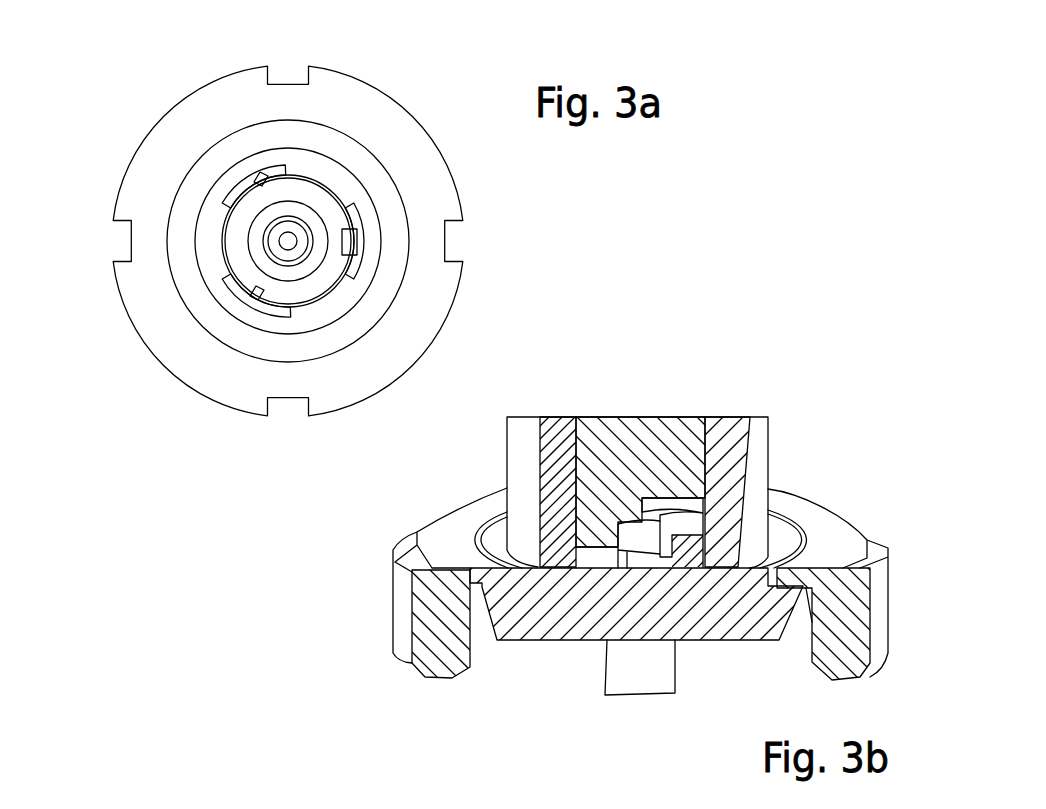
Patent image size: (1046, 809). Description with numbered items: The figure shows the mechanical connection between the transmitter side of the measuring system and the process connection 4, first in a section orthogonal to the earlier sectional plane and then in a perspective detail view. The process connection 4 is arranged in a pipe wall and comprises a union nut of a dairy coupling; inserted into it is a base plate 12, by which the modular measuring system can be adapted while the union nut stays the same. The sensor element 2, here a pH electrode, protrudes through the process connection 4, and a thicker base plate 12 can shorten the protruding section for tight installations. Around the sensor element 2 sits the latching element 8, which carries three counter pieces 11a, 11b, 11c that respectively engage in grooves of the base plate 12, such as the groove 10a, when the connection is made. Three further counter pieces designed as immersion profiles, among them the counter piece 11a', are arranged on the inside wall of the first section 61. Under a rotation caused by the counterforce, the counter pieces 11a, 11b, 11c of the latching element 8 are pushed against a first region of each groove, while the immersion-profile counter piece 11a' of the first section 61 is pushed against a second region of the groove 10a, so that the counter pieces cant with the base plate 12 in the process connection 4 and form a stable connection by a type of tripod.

In FIG. 3A, the sensor element 2 is at (317, 200).
In FIG. 3B, the sensor element 2 is at (635, 681).
In FIG. 3A, the process connection 4 is at (222, 117).
In FIG. 3B, the process connection 4 is at (834, 592).
In FIG. 3B, the latching element 8 is at (635, 448).
In FIG. 3B, the groove 10a is at (617, 560).
In FIG. 3A, the counter piece 11a is at (267, 105).
In FIG. 3B, the counter piece 11a is at (523, 558).
In FIG. 3B, the counter piece 11a' is at (690, 634).
In FIG. 3A, the counter piece 11b is at (357, 246).
In FIG. 3A, the counter piece 11c is at (246, 303).
In FIG. 3A, the base plate 12 is at (192, 198).
In FIG. 3B, the base plate 12 is at (498, 545).
In FIG. 3A, the first section 61 is at (205, 268).
In FIG. 3B, the first section 61 is at (728, 447).